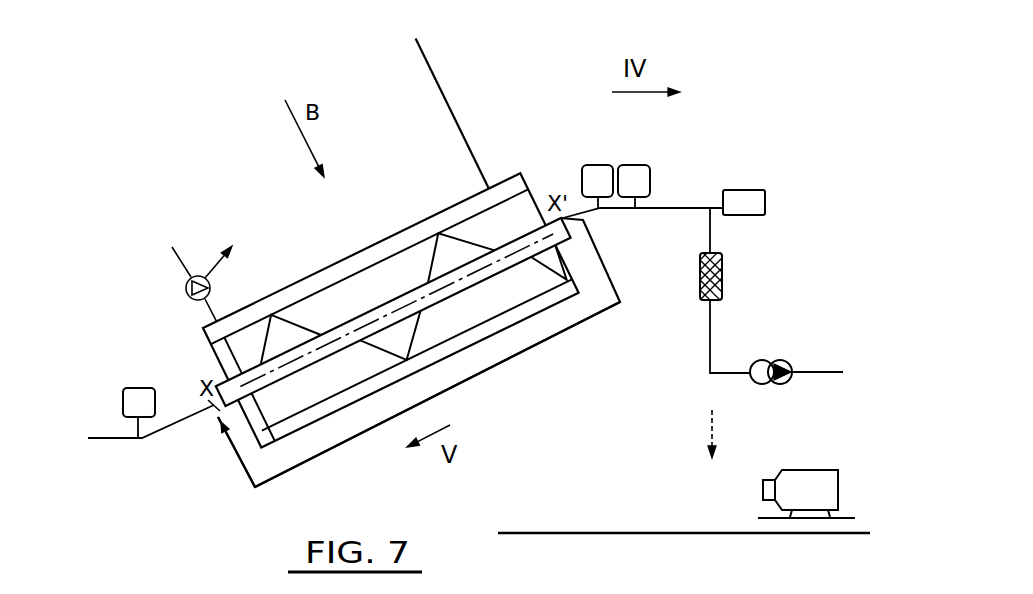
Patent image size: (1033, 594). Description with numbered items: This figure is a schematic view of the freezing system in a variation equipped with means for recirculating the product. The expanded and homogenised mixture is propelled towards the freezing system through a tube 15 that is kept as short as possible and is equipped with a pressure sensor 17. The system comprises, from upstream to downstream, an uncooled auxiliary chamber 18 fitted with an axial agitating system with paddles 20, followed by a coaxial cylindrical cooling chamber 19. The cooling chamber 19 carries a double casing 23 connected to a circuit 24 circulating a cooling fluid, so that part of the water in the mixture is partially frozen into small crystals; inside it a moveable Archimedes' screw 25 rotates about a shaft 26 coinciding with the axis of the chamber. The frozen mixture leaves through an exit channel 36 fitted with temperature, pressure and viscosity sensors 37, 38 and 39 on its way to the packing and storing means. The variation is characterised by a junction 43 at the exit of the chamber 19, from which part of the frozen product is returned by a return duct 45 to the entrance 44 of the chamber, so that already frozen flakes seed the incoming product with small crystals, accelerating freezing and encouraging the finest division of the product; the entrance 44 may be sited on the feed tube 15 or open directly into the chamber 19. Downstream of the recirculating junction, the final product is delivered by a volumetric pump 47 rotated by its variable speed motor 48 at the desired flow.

The tube 15 is at (160, 433).
The pressure sensor 17 is at (142, 388).
The auxiliary chamber 18 is at (273, 433).
The cooling chamber 19 is at (500, 332).
The paddles 20 is at (248, 325).
The double casing 23 is at (502, 190).
The circuit 24 is at (457, 122).
The Archimedes' screw 25 is at (468, 312).
The shaft 26 is at (557, 300).
The exit channel 36 is at (662, 207).
The temperature sensor 37 is at (595, 165).
The pressure sensor 38 is at (632, 165).
The viscosity sensor 39 is at (742, 203).
The junction 43 is at (588, 214).
The entrance 44 is at (212, 410).
The return duct 45 is at (537, 347).
The volumetric pump 47 is at (772, 358).
The variable speed motor 48 is at (812, 468).